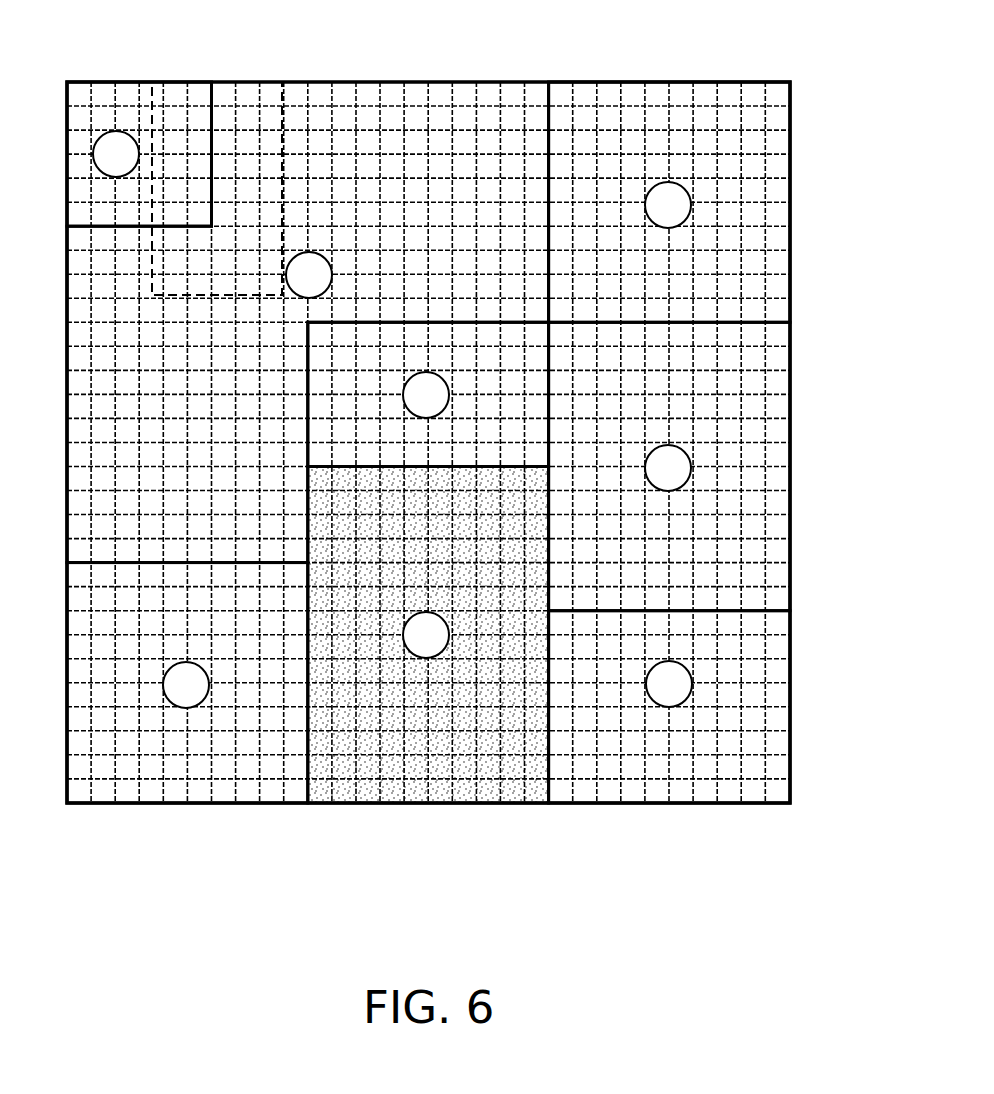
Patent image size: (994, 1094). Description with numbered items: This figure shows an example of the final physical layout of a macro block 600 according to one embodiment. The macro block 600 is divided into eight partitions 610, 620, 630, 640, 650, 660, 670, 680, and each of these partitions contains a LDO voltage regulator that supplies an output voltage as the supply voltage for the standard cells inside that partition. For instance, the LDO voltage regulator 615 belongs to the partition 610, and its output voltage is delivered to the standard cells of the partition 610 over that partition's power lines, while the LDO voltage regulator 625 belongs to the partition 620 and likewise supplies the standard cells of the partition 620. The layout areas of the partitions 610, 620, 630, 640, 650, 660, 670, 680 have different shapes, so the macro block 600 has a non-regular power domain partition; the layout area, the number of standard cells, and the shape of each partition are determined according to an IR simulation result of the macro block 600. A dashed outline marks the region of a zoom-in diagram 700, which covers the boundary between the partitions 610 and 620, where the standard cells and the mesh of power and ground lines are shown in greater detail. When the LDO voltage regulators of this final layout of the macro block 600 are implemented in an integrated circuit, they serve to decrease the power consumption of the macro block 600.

The macro block 600 is at (736, 923).
The partition 610 is at (102, 81).
The LDO voltage regulator 615 is at (96, 133).
The partition 620 is at (414, 81).
The LDO voltage regulator 625 is at (324, 257).
The partition 630 is at (654, 81).
The partition 640 is at (342, 468).
The partition 650 is at (178, 804).
The partition 660 is at (418, 804).
The partition 670 is at (791, 430).
The partition 680 is at (656, 804).
The zoom-in diagram 700 is at (213, 81).